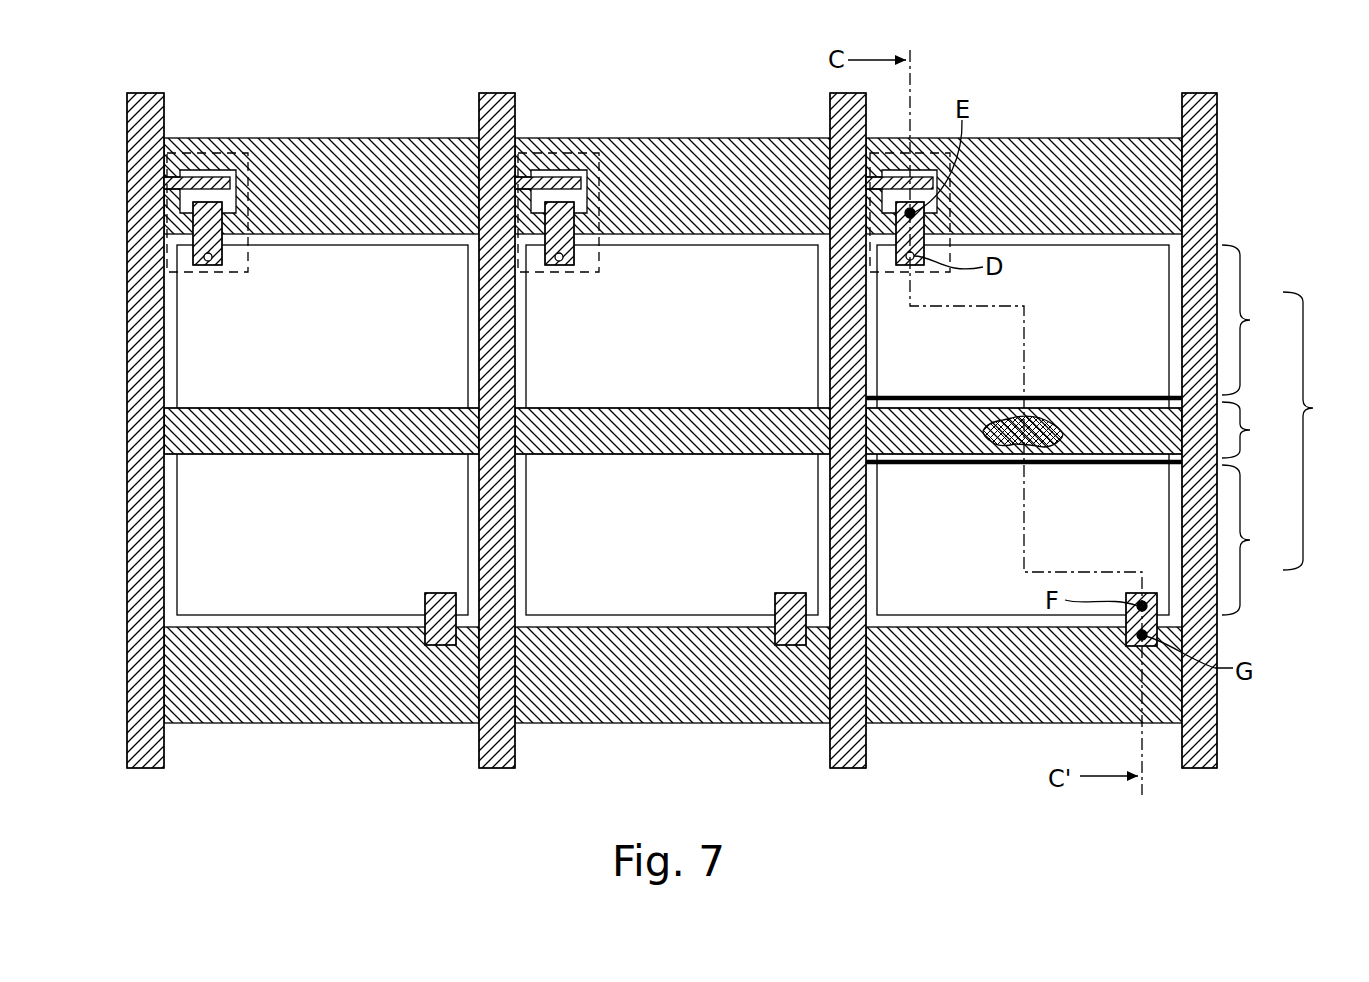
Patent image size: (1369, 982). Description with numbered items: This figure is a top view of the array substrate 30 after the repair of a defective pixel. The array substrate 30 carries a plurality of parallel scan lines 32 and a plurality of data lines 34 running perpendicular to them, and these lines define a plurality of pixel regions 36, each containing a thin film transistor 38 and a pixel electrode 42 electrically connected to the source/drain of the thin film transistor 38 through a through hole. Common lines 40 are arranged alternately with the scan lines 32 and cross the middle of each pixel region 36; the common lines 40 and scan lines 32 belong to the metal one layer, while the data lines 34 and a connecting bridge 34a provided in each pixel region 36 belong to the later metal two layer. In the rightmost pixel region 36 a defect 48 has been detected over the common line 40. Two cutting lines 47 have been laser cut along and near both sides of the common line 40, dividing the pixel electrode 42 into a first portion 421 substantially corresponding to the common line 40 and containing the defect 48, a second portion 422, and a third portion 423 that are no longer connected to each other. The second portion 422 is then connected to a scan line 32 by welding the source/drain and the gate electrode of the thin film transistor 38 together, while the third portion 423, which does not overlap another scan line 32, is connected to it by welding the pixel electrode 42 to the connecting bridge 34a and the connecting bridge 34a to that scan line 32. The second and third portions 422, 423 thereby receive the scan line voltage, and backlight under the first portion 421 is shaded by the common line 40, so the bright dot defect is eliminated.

The array substrate 30 is at (1064, 70).
The scan line 32 is at (360, 157).
The data line 34 is at (137, 125).
The connecting bridge 34a is at (437, 647).
The pixel region 36 is at (332, 340).
The thin film transistor 38 is at (205, 152).
The common line 40 is at (183, 433).
The pixel electrode 42 is at (1316, 431).
The first portion 421 is at (1260, 430).
The second portion 422 is at (1260, 320).
The third portion 423 is at (1260, 540).
The cutting line 47 is at (1097, 396).
The defect 48 is at (1000, 447).